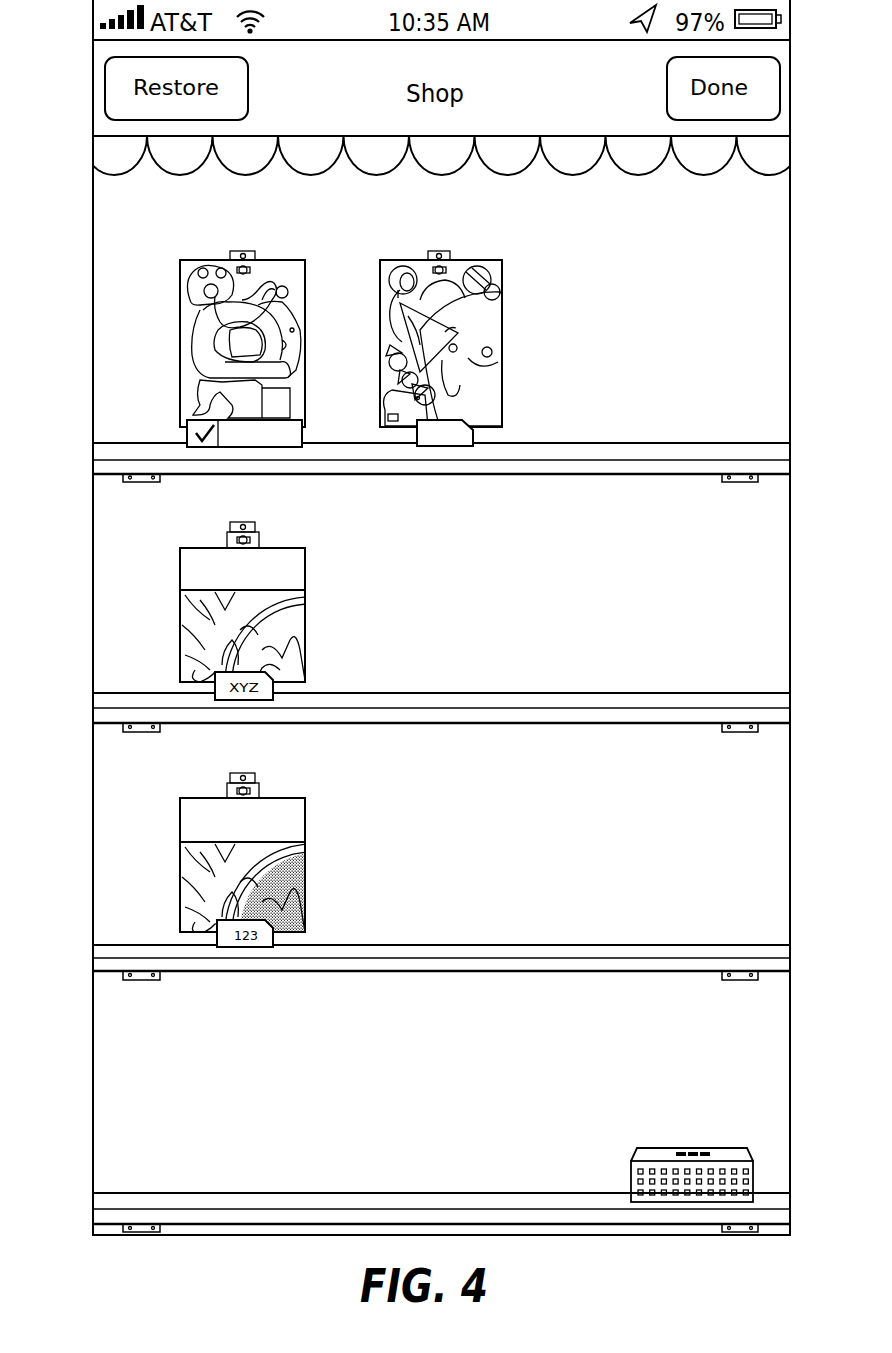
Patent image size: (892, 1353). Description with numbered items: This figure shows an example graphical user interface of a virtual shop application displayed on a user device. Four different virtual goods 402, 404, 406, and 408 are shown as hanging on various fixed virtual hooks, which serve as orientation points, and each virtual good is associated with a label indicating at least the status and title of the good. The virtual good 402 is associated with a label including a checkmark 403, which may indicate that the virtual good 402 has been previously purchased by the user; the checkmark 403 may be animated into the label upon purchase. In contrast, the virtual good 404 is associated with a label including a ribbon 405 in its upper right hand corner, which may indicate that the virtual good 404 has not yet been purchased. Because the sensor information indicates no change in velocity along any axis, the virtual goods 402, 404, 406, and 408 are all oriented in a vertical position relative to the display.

The virtual good 402 is at (180, 262).
The checkmark 403 is at (197, 414).
The virtual good 404 is at (400, 255).
The ribbon 405 is at (465, 420).
The virtual good 406 is at (180, 553).
The virtual good 408 is at (180, 803).